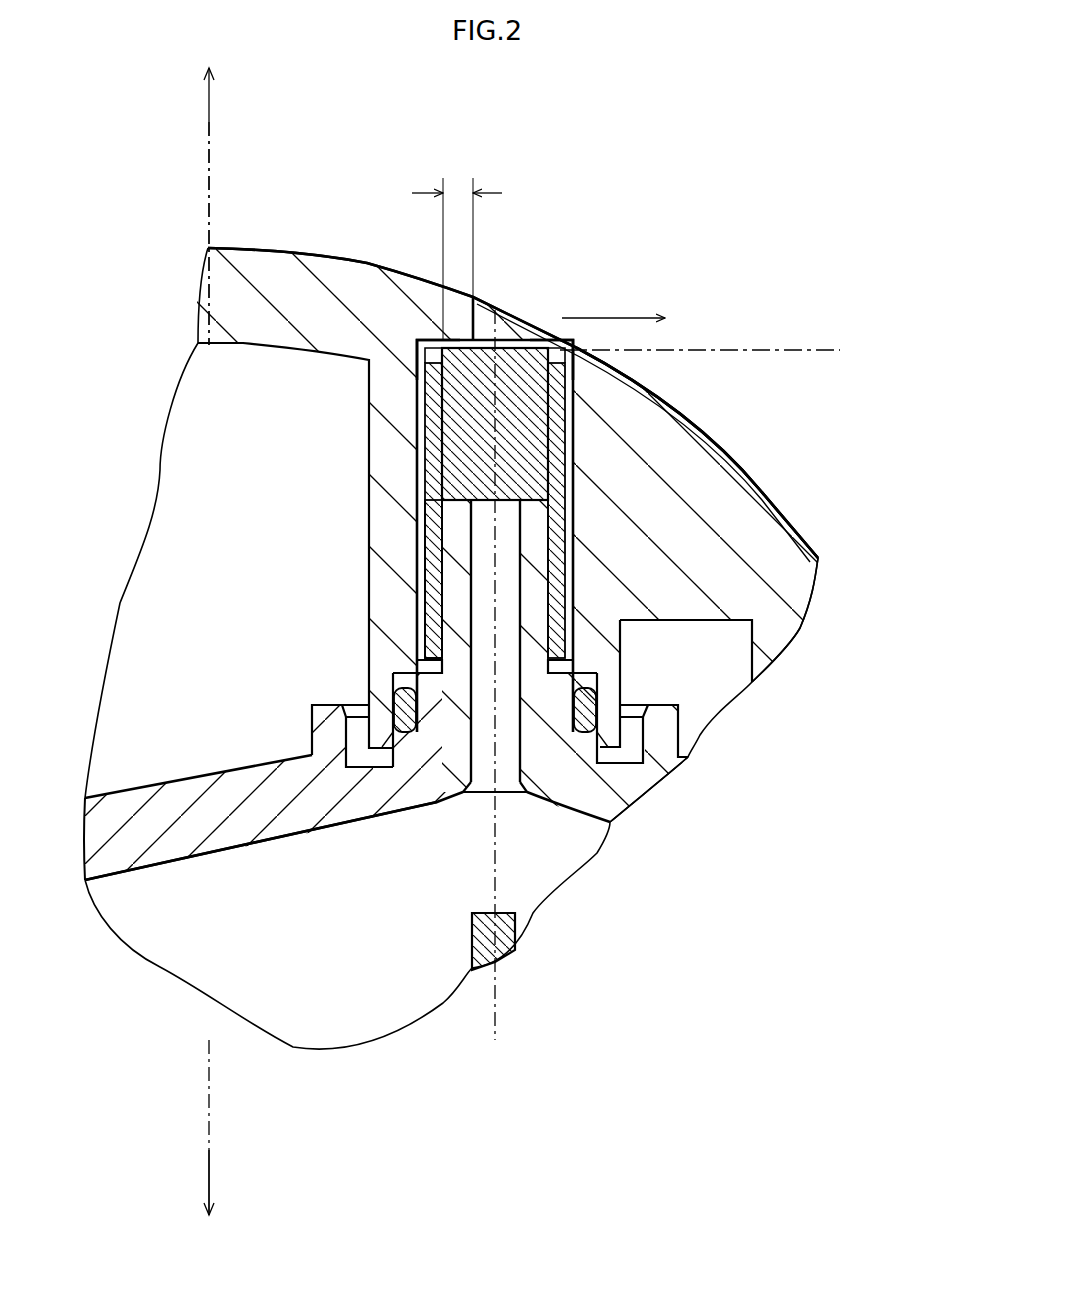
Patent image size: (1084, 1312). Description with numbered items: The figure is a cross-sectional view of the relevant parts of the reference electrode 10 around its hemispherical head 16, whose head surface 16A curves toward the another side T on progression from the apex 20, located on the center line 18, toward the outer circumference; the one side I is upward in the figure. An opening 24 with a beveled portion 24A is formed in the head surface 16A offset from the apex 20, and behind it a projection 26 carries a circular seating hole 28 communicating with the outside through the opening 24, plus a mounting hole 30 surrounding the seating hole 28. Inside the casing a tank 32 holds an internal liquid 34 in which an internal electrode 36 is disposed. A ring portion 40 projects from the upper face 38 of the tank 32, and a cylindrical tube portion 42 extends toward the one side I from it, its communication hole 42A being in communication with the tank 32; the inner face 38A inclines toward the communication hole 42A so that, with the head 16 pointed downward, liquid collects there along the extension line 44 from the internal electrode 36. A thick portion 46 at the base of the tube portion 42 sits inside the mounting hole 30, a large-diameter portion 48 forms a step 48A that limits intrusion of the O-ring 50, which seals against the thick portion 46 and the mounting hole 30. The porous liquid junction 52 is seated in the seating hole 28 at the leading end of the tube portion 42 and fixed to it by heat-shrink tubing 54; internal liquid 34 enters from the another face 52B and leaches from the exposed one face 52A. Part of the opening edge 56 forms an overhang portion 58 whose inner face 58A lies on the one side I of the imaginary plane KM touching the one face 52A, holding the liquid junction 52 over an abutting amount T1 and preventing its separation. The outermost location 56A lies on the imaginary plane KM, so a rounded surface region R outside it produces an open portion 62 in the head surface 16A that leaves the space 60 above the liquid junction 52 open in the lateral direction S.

The reference electrode 10 is at (780, 222).
The head 16 is at (818, 540).
The head surface 16A is at (818, 562).
The center line 18 is at (209, 152).
The apex 20 is at (216, 243).
The opening 24 is at (545, 310).
The beveled portion 24A is at (489, 322).
The projection 26 is at (368, 448).
The seating hole 28 is at (417, 660).
The mounting hole 30 is at (587, 657).
The tank 32 is at (118, 778).
The internal liquid 34 is at (390, 1013).
The internal electrode 36 is at (513, 953).
The upper face 38 is at (198, 773).
The inner face 38A is at (173, 865).
The ring portion 40 is at (322, 735).
The tube portion 42 is at (453, 560).
The communication hole 42A is at (471, 615).
The extension line 44 is at (497, 1013).
The thick portion 46 is at (555, 710).
The large-diameter portion 48 is at (585, 757).
The step 48A is at (647, 717).
The O-ring 50 is at (600, 690).
The liquid junction 52 is at (532, 435).
The one face 52A is at (500, 342).
The another face 52B is at (437, 537).
The heat-shrink tubing 54 is at (558, 452).
The opening edge 56 is at (410, 270).
The outermost location 56A is at (578, 347).
The overhang portion 58 is at (457, 303).
The inner face 58A is at (415, 340).
The space 60 is at (520, 307).
The open portion 62 is at (592, 307).
The one side I is at (209, 97).
The another side T is at (209, 1178).
The lateral direction S is at (628, 318).
The rounded surface region R is at (695, 396).
The imaginary plane KM is at (830, 345).
The abutting amount T1 is at (457, 241).